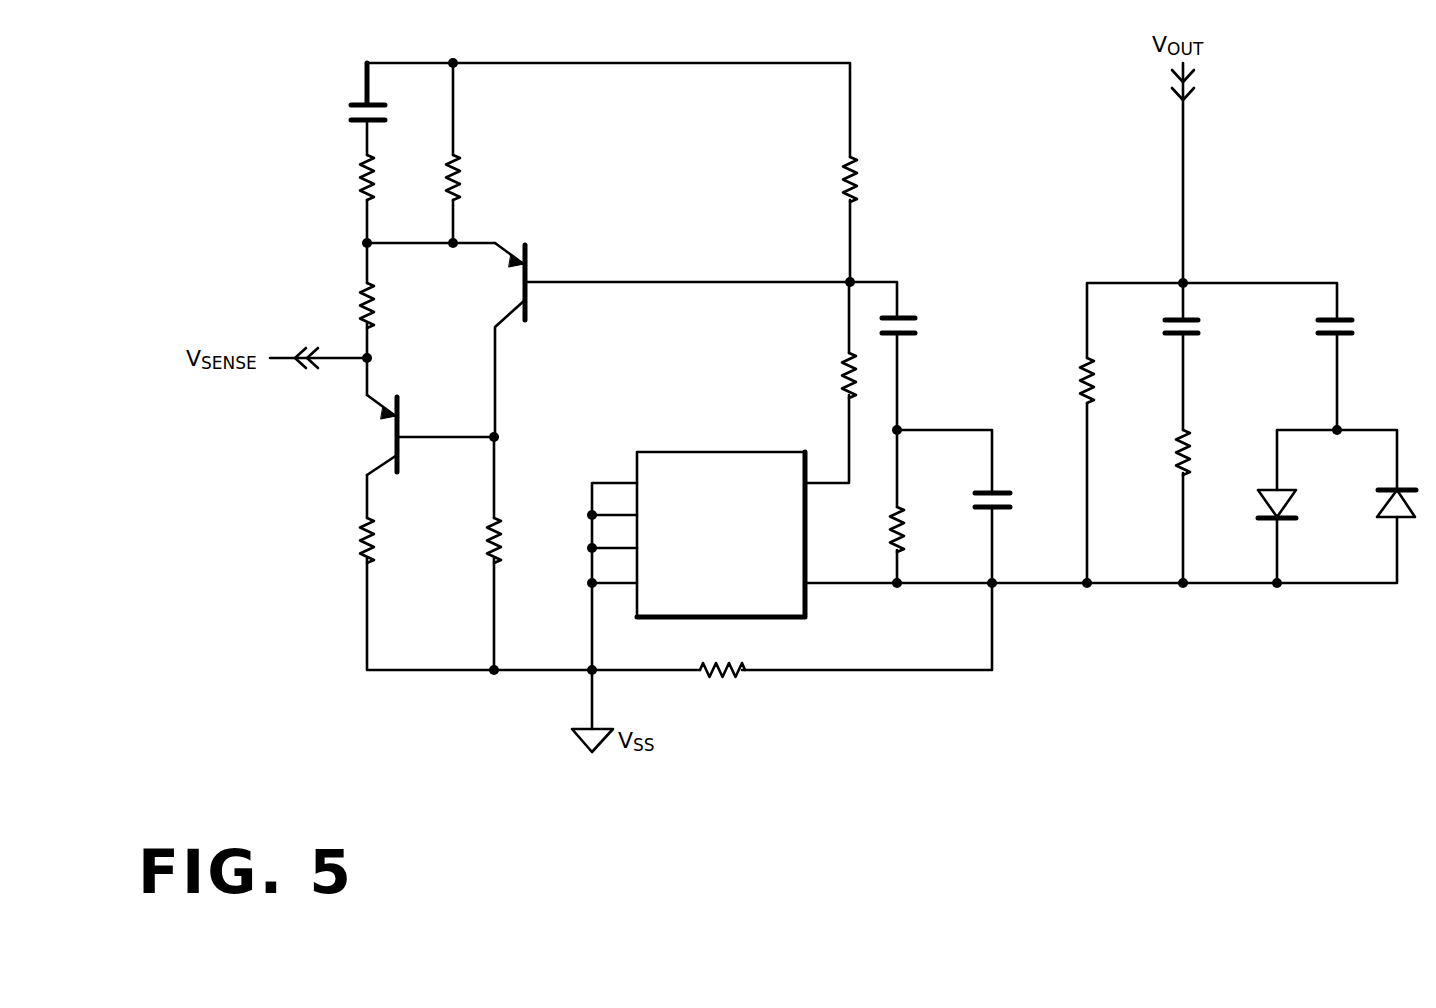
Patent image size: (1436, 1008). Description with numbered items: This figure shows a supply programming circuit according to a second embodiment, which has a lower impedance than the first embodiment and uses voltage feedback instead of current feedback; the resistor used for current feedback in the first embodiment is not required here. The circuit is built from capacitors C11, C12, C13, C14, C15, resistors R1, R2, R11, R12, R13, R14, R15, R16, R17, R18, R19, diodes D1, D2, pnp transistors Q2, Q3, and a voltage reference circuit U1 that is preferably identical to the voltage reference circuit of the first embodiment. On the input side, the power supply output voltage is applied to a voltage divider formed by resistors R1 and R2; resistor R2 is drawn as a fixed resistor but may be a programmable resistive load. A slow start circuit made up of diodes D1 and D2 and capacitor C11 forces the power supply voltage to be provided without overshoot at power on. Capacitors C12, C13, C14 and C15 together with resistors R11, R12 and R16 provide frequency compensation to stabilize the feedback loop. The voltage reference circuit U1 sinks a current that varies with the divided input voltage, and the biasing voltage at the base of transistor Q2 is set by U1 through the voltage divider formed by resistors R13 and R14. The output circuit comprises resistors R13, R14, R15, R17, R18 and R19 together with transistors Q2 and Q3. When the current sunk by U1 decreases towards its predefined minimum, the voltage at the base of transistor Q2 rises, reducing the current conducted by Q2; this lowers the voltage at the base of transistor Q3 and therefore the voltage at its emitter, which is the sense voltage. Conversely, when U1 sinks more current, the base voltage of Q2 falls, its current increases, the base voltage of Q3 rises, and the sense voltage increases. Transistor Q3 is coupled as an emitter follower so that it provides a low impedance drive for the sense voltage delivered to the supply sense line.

The capacitor C15 is at (392, 94).
The resistor R16 is at (392, 177).
The resistor R15 is at (477, 177).
The resistor R18 is at (392, 305).
The pnp transistor Q2 is at (501, 340).
The pnp transistor Q3 is at (420, 435).
The resistor R19 is at (392, 540).
The resistor R17 is at (519, 540).
The voltage reference circuit U1 is at (724, 534).
The resistor R14 is at (872, 179).
The resistor R13 is at (828, 375).
The capacitor C14 is at (921, 327).
The resistor R12 is at (920, 529).
The capacitor C13 is at (1015, 502).
The resistor R2 is at (722, 685).
The resistor R1 is at (1104, 380).
The capacitor C12 is at (1205, 327).
The resistor R11 is at (1205, 452).
The capacitor C11 is at (1358, 327).
The diode D1 is at (1261, 504).
The diode D2 is at (1382, 503).